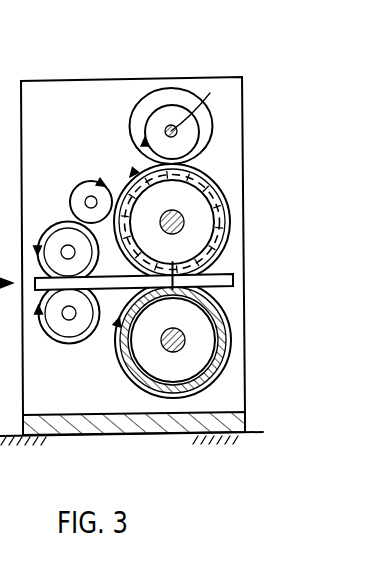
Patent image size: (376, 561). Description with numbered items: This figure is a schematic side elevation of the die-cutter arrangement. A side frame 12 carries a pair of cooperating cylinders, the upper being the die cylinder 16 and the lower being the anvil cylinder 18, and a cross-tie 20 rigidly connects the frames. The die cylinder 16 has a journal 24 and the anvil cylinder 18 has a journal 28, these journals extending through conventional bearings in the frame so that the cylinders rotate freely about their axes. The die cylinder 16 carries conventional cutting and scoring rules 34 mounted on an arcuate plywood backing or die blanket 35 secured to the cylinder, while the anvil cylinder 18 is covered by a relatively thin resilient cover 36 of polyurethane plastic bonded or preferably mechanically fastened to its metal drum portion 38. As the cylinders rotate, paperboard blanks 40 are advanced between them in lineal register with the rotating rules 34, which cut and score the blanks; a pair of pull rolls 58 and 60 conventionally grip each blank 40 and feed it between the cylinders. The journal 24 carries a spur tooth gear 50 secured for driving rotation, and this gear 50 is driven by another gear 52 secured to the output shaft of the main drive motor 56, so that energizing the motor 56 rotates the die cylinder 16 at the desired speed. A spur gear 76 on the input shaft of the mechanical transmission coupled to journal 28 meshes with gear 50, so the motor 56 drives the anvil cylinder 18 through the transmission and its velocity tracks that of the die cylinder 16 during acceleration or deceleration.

The side frame 12 is at (200, 77).
The die cylinder 16 is at (230, 232).
The anvil cylinder 18 is at (211, 384).
The cross-tie 20 is at (66, 415).
The journal 24 is at (179, 209).
The journal 28 is at (181, 329).
The cutting and scoring rules 34 is at (182, 247).
The die blanket 35 is at (224, 199).
The resilient cover 36 is at (124, 366).
The metal drum portion 38 is at (121, 358).
The paperboard blank 40 is at (231, 273).
The spur tooth gear 50 is at (202, 170).
The gear 52 is at (145, 127).
The main drive motor 56 is at (137, 104).
The pull roll 58 is at (57, 223).
The pull roll 60 is at (63, 340).
The spur gear 76 is at (131, 383).